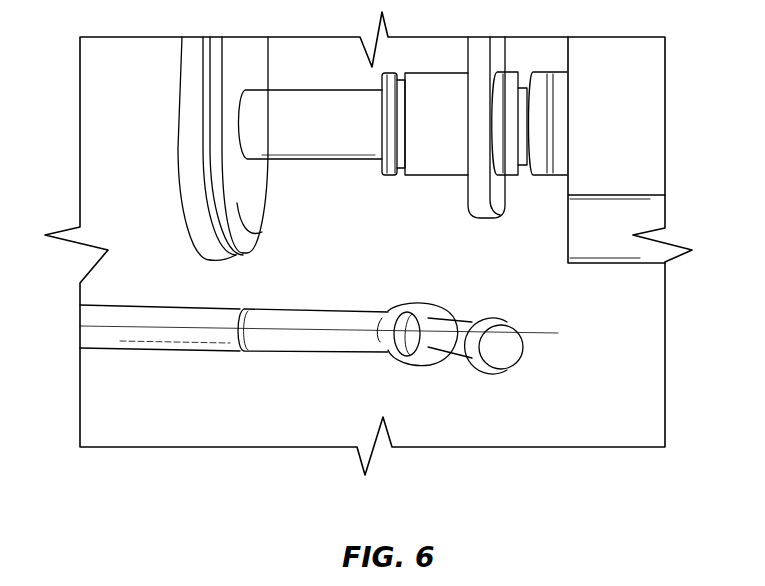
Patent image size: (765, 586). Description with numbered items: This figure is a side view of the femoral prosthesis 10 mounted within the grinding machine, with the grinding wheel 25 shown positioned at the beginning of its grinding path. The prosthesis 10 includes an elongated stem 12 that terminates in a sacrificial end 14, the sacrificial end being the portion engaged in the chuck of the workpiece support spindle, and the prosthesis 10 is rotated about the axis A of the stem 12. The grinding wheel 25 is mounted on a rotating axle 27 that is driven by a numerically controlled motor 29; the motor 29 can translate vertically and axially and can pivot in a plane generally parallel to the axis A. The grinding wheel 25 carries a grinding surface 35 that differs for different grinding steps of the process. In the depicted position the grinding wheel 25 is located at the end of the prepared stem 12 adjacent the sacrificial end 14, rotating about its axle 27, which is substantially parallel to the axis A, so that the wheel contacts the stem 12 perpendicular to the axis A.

The femoral prosthesis 10 is at (338, 331).
The elongated stem 12 is at (297, 337).
The sacrificial end 14 is at (127, 338).
The grinding wheel 25 is at (257, 188).
The rotating axle 27 is at (295, 87).
The numerically controlled motor 29 is at (567, 215).
The grinding surface 35 is at (188, 126).
The axis of the stem A is at (552, 331).